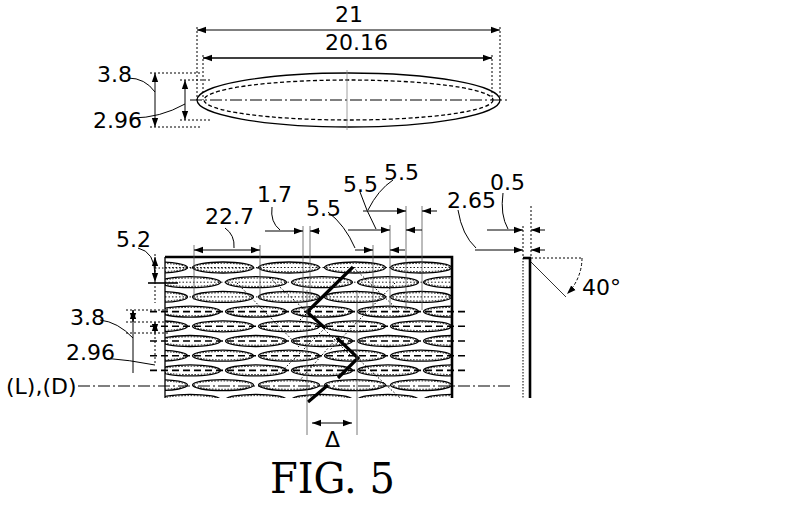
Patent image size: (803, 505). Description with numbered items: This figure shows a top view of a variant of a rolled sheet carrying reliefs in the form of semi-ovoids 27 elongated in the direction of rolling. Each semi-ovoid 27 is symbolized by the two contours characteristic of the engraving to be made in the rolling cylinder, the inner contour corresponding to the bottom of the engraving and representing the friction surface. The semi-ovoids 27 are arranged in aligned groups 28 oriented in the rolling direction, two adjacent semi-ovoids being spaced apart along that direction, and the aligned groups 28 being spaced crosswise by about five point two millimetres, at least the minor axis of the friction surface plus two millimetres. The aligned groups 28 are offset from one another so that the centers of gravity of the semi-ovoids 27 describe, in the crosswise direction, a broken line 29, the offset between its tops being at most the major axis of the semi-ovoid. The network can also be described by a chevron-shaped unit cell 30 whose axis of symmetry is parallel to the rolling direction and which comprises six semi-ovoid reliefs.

The semi-ovoid relief 27 is at (212, 147).
The aligned group of reliefs 28 is at (468, 310).
The broken line 29 is at (373, 373).
The unit cell 30 is at (428, 297).